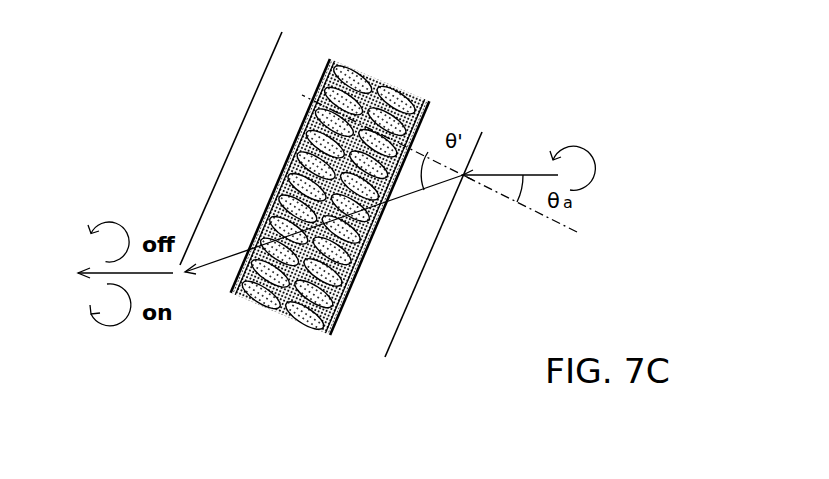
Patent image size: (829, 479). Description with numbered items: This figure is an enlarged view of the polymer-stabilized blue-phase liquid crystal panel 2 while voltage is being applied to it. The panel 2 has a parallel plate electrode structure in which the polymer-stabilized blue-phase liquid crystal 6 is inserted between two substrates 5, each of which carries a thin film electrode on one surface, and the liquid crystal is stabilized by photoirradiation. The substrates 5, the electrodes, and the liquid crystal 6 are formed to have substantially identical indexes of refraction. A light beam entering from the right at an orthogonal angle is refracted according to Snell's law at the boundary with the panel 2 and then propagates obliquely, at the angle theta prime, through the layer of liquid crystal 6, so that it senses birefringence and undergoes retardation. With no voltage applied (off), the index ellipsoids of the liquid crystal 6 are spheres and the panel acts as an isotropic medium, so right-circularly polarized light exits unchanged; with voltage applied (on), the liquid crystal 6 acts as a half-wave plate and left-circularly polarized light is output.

The polymer-stabilized blue-phase liquid crystal panel 2 is at (193, 165).
The substrate 5 is at (402, 275).
The polymer-stabilized blue-phase liquid crystal 6 is at (329, 170).